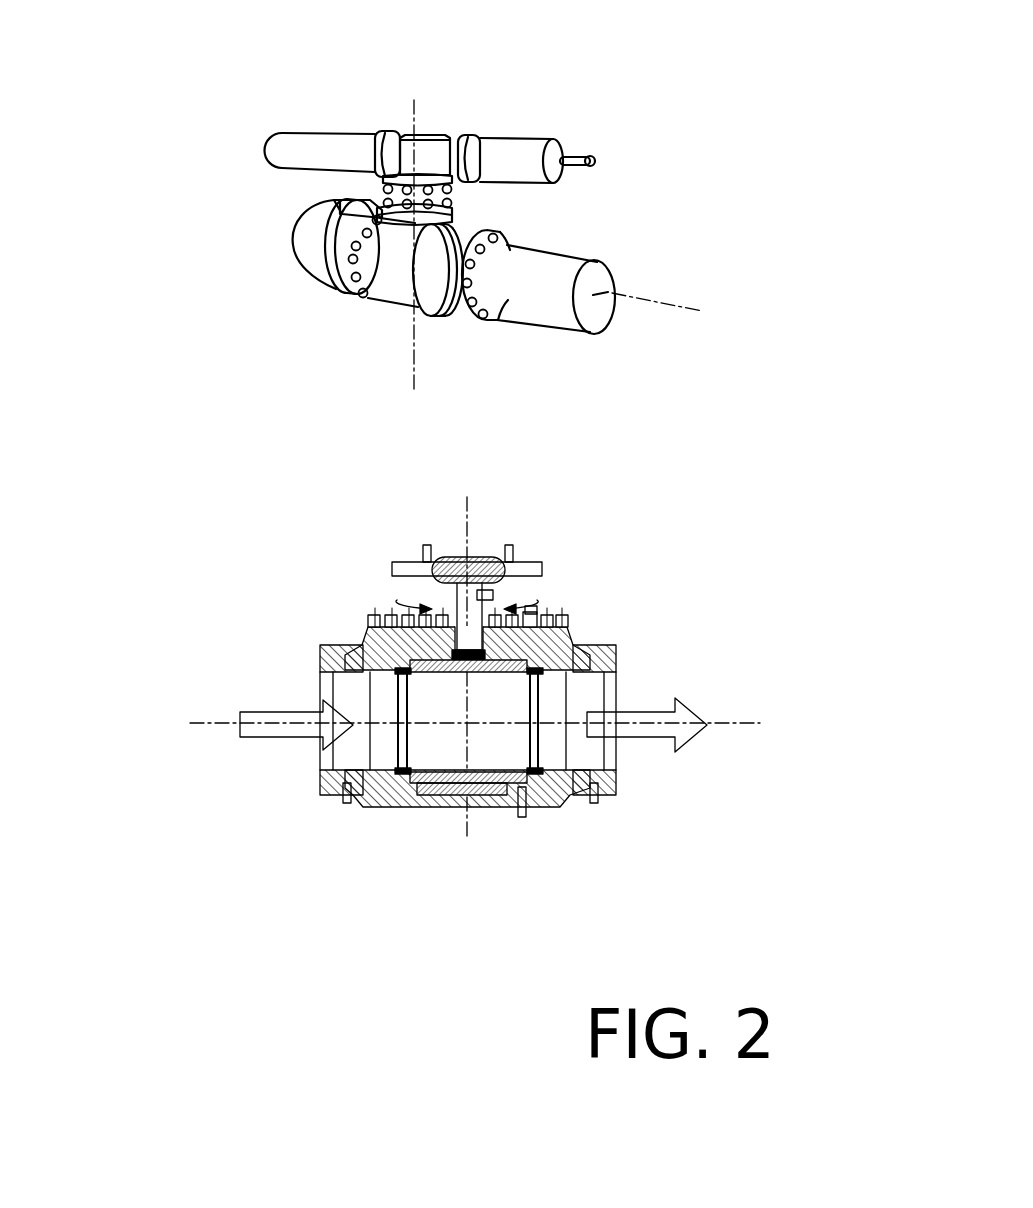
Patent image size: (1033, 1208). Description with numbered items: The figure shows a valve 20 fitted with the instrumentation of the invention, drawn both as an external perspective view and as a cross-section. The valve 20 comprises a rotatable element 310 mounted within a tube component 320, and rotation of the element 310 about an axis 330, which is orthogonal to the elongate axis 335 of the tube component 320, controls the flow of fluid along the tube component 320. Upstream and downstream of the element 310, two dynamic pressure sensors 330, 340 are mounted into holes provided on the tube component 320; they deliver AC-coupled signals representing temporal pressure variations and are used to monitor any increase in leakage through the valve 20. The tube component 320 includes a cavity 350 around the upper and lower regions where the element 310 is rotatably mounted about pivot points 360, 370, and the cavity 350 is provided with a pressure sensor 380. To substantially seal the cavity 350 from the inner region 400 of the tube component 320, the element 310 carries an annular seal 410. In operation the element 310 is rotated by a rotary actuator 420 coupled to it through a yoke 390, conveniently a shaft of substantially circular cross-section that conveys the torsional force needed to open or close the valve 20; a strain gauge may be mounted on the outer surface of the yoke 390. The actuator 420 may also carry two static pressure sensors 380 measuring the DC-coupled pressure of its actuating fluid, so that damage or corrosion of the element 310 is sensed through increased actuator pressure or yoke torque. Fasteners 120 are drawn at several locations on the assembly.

The valve 20 is at (584, 63).
The fasteners 120 is at (500, 592).
The rotatable element 310 is at (469, 727).
The tube component 320 is at (372, 807).
The axis 330 is at (415, 347).
The elongate axis 335 is at (670, 308).
The dynamic pressure sensor 340 is at (594, 798).
The cavity 350 is at (367, 628).
The pivot point 360 is at (462, 808).
The pivot point 370 is at (397, 612).
The pressure sensor 380 is at (425, 547).
The yoke 390 is at (458, 590).
The inner region 400 is at (385, 692).
The annular seal 410 is at (545, 700).
The rotary actuator 420 is at (427, 162).